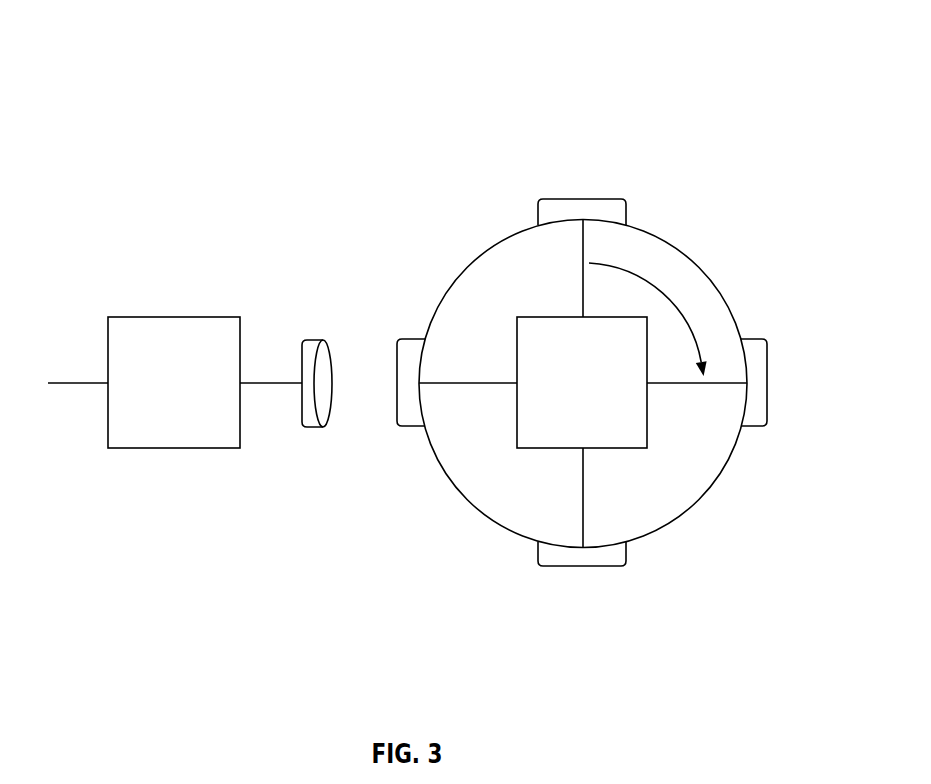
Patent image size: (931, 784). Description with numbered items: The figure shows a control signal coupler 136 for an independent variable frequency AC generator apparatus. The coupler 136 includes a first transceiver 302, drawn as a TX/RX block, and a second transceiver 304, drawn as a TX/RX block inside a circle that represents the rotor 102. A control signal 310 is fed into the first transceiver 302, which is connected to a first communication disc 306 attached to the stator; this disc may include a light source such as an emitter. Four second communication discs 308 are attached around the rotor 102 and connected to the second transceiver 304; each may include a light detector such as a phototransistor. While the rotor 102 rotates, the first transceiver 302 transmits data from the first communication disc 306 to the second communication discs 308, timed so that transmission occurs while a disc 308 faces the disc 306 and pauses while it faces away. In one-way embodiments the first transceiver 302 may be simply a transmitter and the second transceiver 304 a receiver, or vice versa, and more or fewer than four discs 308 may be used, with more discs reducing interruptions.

The control signal coupler 136 is at (102, 50).
The rotor 102 is at (705, 272).
The first transceiver 302 is at (140, 317).
The second transceiver 304 is at (547, 317).
The first communication disc 306 is at (314, 340).
The second communication discs 308 is at (553, 199).
The control signal 310 is at (78, 383).